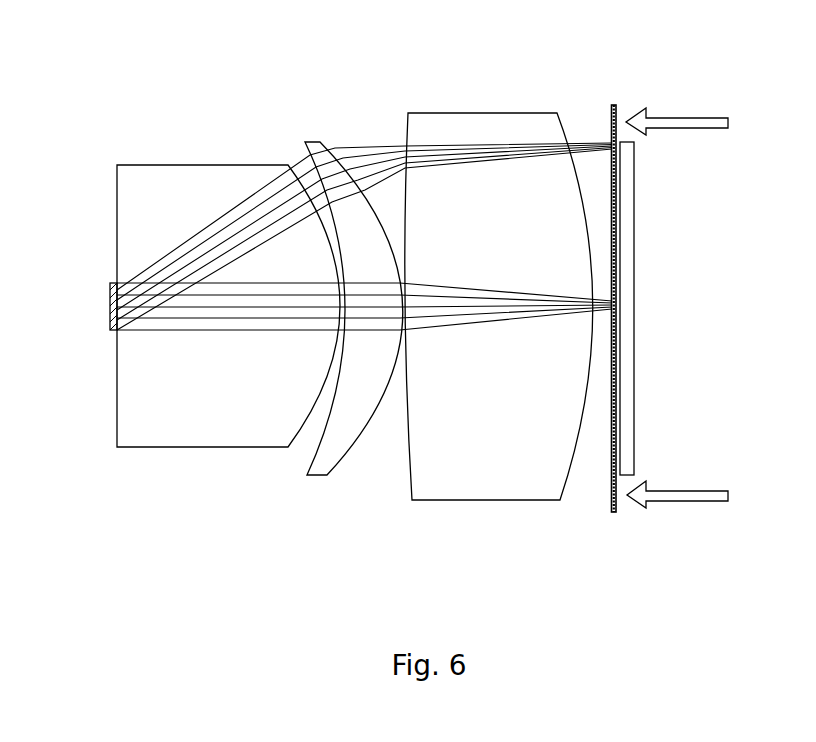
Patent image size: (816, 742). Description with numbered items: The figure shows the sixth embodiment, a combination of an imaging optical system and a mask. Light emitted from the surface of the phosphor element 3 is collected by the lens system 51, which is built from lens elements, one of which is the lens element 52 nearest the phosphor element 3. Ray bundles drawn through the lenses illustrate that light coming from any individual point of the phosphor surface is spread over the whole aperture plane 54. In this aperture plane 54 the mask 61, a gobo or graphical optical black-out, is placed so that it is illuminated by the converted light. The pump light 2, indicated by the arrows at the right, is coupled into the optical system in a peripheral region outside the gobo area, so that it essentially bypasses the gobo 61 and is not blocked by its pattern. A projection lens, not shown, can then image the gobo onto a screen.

The pump light 2 is at (683, 120).
The phosphor element 3 is at (110, 309).
The lens system 51 is at (552, 95).
The lens element 52 is at (188, 432).
The aperture plane 54 is at (588, 262).
The mask (gobo) 61 is at (634, 433).